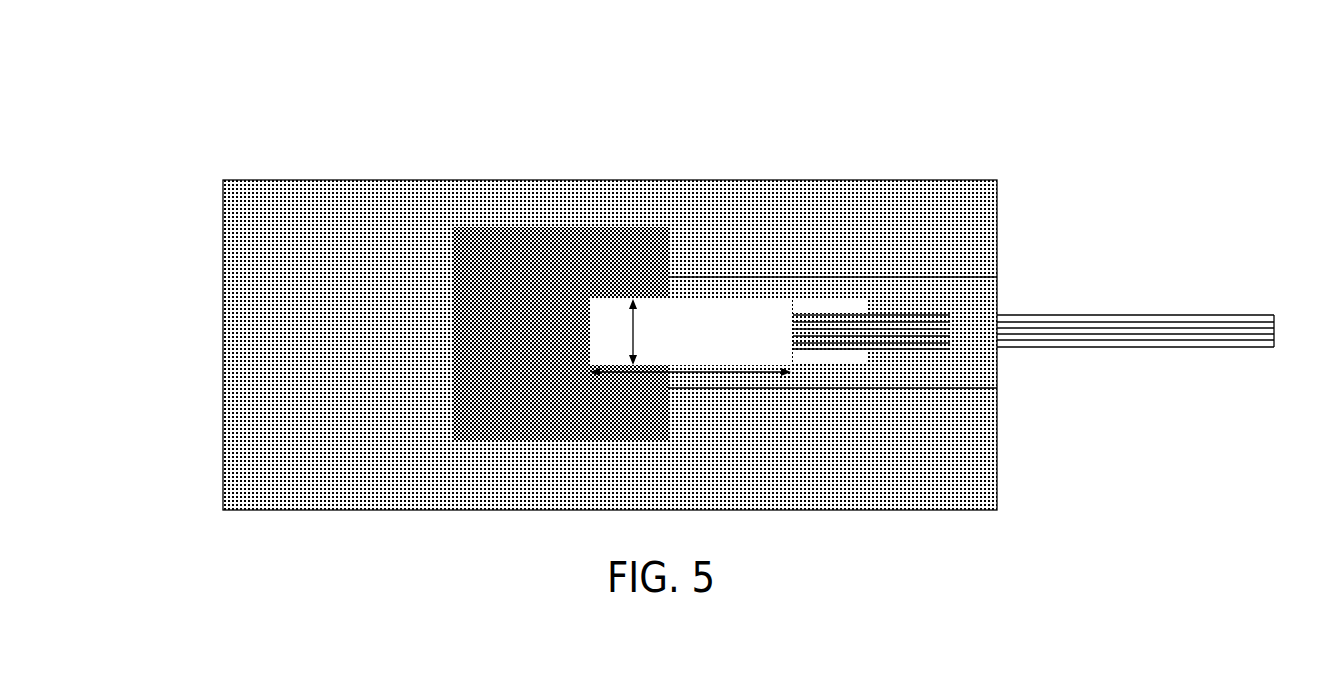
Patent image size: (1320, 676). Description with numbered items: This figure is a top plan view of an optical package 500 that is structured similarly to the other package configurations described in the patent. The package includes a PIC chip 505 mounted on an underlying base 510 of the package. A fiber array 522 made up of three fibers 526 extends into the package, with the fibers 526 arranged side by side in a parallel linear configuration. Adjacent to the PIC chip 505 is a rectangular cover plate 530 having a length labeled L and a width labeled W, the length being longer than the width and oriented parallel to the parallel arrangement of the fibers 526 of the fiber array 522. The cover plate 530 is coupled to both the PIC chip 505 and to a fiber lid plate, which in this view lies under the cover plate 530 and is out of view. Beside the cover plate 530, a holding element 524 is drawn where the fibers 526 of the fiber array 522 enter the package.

The optical package 500 is at (186, 83).
The PIC chip 505 is at (522, 248).
The substrate 510 is at (385, 460).
The fiber array 522 is at (1095, 309).
The fiber holder 524 is at (814, 305).
The optical fiber 526 is at (913, 348).
The cover plate 530 is at (705, 333).